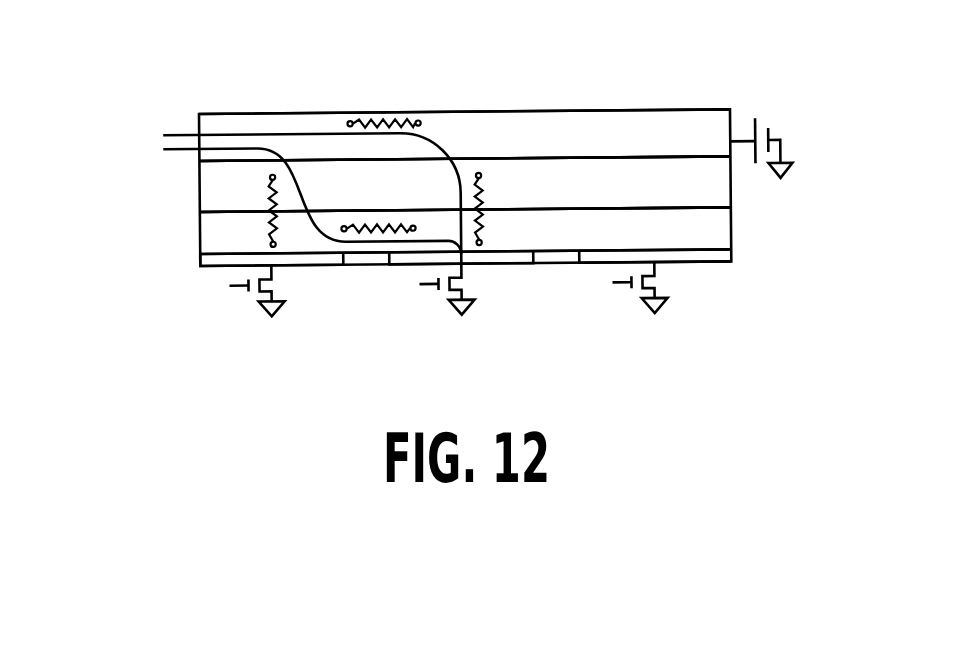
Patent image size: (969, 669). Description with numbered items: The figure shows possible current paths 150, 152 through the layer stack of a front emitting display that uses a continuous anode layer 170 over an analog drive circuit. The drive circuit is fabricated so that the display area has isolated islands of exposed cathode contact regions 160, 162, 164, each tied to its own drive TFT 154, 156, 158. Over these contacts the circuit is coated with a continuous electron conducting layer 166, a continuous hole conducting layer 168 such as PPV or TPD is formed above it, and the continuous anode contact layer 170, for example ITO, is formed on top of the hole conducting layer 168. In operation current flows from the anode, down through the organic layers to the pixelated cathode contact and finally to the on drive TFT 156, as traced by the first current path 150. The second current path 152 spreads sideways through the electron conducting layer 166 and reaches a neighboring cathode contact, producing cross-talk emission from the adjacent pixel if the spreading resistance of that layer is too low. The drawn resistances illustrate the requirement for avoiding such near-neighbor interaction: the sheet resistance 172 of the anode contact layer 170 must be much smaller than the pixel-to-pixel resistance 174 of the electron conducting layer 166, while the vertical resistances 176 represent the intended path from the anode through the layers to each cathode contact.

The current path 150 is at (157, 137).
The current path 152 is at (157, 149).
The drive TFT 154 is at (273, 284).
The drive TFT 156 is at (465, 283).
The drive TFT 158 is at (657, 280).
The cathode contact region 160 is at (212, 260).
The cathode contact region 162 is at (405, 260).
The cathode contact region 164 is at (597, 257).
The continuous electron conducting layer 166 is at (708, 230).
The continuous hole conducting layer 168 is at (712, 182).
The continuous anode contact layer 170 is at (653, 137).
The sheet resistance of the anode contact 172 is at (422, 124).
The pixel-to-pixel resistance of the electron conducting layer 174 is at (345, 224).
The resistance 176 is at (267, 192).